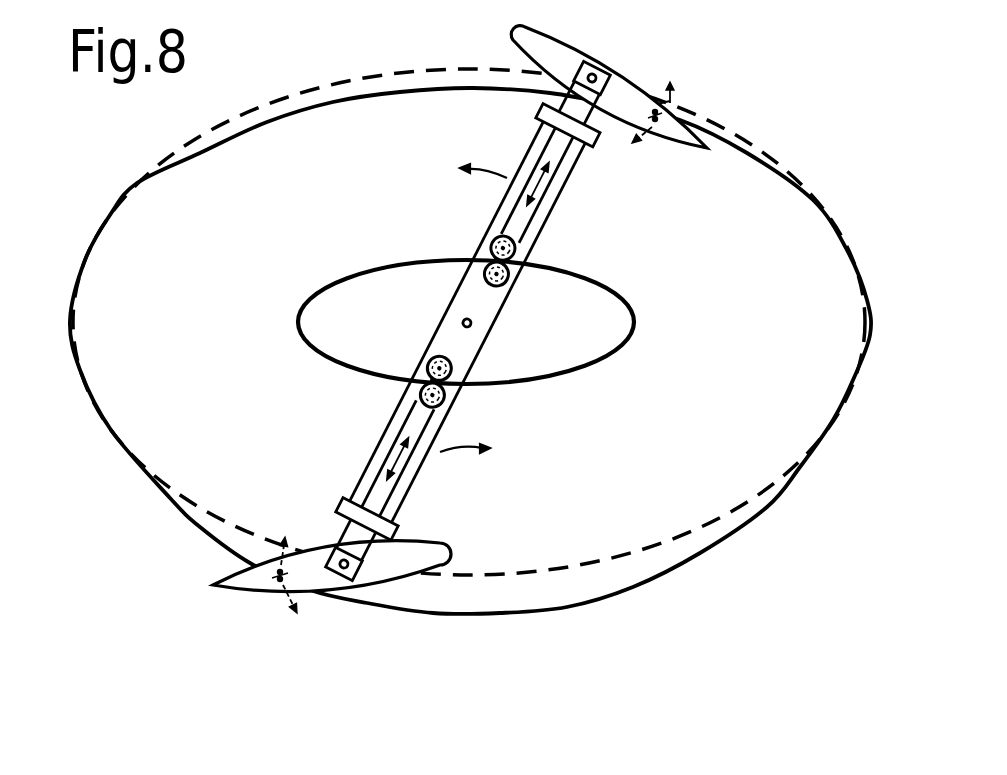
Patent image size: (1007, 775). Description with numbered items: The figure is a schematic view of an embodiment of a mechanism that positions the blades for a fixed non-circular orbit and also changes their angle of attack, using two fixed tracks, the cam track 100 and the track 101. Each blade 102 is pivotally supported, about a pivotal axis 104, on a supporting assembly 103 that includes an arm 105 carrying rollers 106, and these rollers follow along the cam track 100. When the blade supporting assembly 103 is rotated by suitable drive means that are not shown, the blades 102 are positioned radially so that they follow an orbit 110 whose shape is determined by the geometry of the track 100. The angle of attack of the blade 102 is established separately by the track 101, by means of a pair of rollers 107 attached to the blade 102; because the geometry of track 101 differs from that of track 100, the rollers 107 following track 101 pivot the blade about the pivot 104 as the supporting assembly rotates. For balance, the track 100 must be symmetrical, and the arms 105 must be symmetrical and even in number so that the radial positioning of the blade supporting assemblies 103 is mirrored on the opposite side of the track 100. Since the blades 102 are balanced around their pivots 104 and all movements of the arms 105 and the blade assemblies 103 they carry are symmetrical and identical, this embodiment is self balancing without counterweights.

The cam track 100 is at (618, 295).
The track 101 is at (478, 92).
The blade 102 is at (573, 43).
The supporting assembly 103 is at (315, 523).
The pivotal axis 104 is at (357, 572).
The arm 105 is at (553, 176).
The rollers 106 is at (487, 233).
The pair of rollers 107 is at (658, 125).
The orbit 110 is at (425, 62).